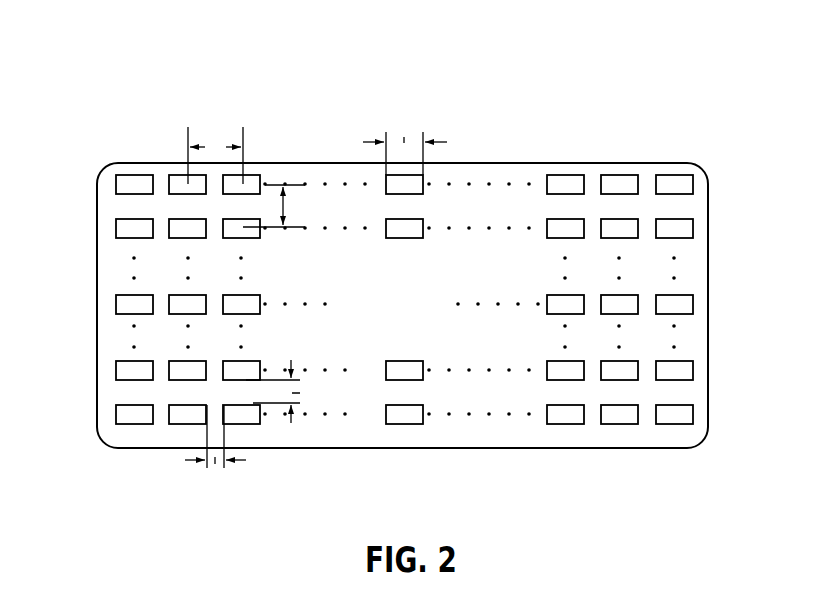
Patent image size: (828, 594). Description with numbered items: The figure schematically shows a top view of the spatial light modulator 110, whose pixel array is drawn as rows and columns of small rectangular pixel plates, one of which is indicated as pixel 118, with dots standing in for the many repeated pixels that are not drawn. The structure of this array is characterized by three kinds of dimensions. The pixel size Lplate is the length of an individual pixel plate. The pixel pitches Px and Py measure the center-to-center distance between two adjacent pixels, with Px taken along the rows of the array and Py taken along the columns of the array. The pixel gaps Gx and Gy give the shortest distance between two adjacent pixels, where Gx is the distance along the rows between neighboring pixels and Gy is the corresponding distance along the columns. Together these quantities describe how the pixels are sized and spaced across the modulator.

The spatial light modulator 110 is at (311, 93).
The plate element 118 is at (565, 188).
The pixel pitch along the rows Px is at (215, 151).
The pixel pitch along the columns Py is at (278, 209).
The pixel size Lplate is at (405, 137).
The pixel gap along the rows Gx is at (215, 454).
The pixel gap along the columns Gy is at (289, 391).